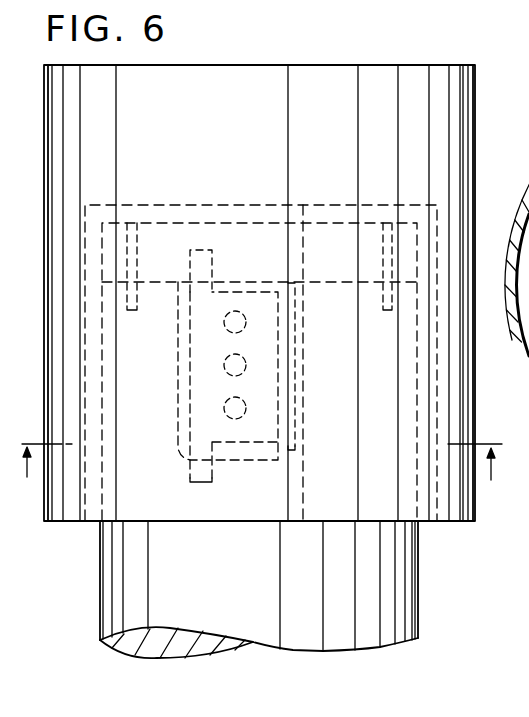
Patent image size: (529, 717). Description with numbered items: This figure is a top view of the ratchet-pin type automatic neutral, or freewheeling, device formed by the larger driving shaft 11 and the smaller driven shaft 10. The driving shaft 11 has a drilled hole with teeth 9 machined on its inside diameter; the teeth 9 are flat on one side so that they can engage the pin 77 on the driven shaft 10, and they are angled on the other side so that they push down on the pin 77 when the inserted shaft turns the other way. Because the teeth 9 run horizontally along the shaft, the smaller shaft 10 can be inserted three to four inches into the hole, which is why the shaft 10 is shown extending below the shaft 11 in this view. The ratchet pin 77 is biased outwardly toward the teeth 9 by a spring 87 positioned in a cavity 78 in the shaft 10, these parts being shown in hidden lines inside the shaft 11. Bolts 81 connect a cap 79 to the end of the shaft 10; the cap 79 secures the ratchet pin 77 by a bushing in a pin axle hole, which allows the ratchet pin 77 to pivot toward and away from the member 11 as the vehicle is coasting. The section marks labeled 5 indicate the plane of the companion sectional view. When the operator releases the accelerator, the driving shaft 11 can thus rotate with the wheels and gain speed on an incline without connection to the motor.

The section line 5- 5 is at (261, 477).
The teeth 9 is at (305, 499).
The driven shaft 10 is at (390, 587).
The driving shaft 11 is at (240, 73).
The ratchet pin 77 is at (208, 264).
The cavity 78 is at (177, 382).
The cap 79 is at (178, 221).
The bolts 81 is at (126, 221).
The spring 87 is at (246, 372).